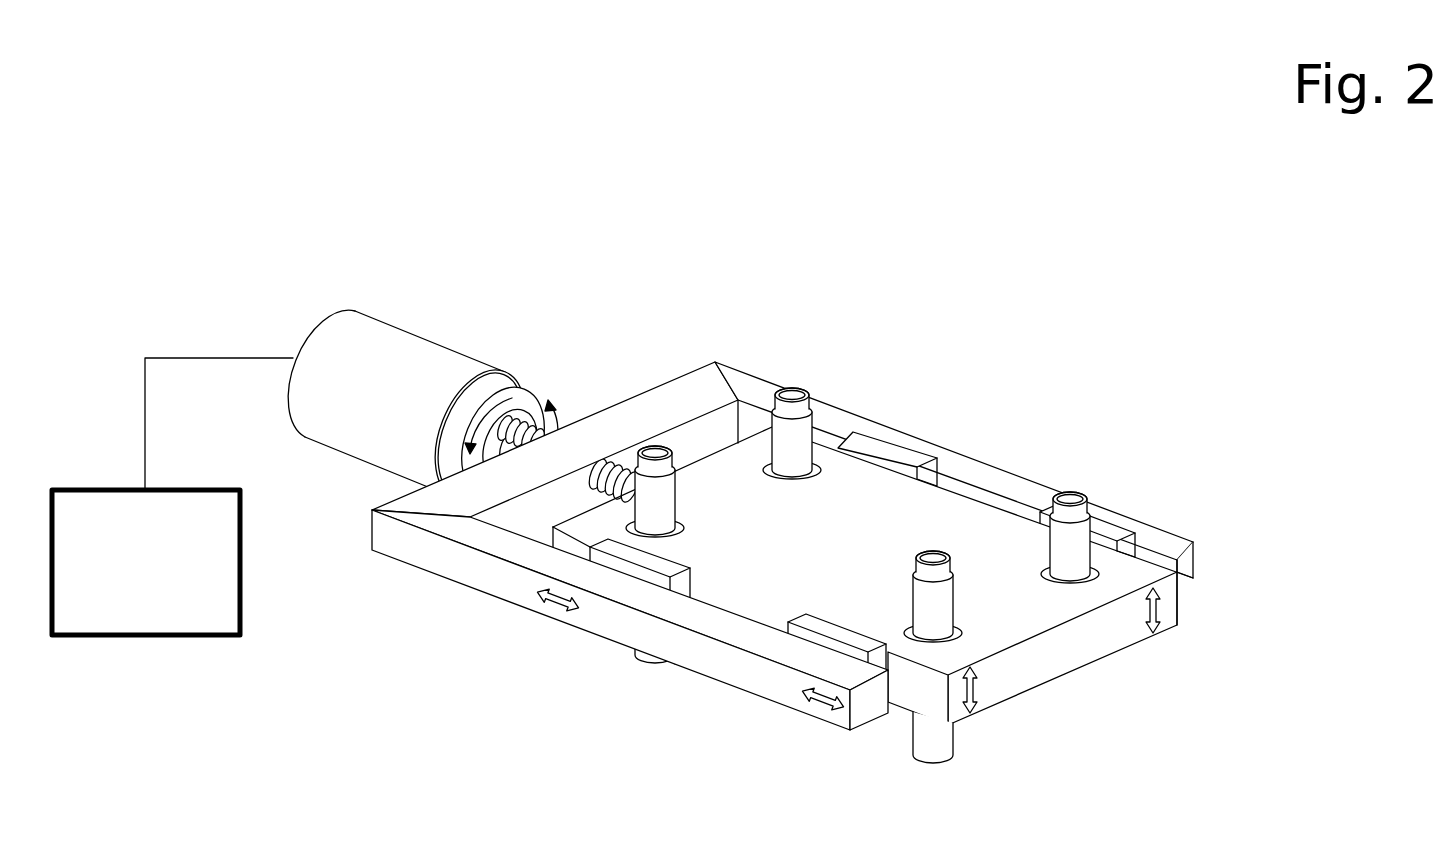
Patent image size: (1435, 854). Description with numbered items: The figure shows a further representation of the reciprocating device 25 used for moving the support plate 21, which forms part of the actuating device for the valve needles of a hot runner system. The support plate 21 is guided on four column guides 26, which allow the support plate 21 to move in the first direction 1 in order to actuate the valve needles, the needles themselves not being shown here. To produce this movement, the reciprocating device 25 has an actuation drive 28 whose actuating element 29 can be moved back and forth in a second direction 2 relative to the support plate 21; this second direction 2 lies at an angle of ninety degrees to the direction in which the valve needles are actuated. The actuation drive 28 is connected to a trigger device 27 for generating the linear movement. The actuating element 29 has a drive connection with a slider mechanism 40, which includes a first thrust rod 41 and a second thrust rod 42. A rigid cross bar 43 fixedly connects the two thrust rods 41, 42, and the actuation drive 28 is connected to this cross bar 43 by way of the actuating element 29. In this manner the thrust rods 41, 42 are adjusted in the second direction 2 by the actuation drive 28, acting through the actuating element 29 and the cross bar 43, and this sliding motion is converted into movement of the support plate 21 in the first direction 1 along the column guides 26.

The first direction 1 is at (1158, 627).
The second direction 2 is at (553, 598).
The support plate 21 is at (868, 545).
The reciprocating device 25 is at (993, 226).
The column guides 26 is at (792, 440).
The trigger device 27 is at (163, 584).
The actuation drive 28 is at (390, 368).
The actuating element 29 is at (519, 425).
The slider mechanism 40 is at (797, 515).
The first thrust rod 41 is at (1018, 487).
The second thrust rod 42 is at (732, 658).
The cross bar 43 is at (653, 405).